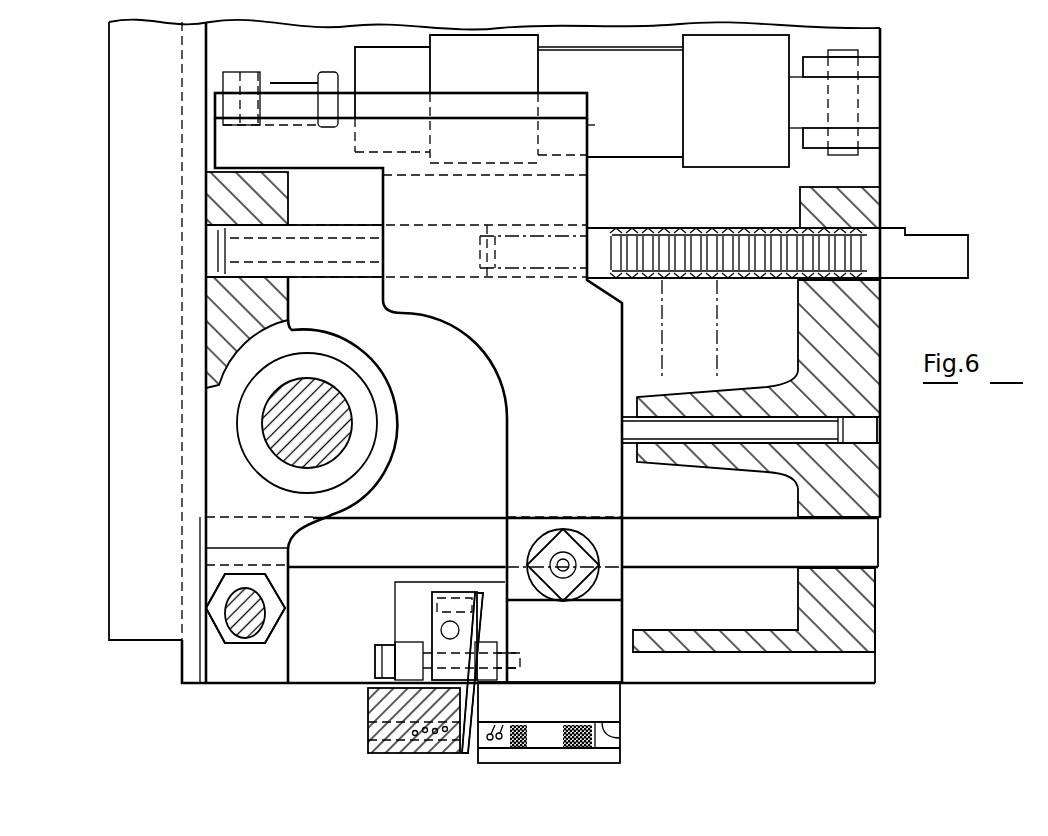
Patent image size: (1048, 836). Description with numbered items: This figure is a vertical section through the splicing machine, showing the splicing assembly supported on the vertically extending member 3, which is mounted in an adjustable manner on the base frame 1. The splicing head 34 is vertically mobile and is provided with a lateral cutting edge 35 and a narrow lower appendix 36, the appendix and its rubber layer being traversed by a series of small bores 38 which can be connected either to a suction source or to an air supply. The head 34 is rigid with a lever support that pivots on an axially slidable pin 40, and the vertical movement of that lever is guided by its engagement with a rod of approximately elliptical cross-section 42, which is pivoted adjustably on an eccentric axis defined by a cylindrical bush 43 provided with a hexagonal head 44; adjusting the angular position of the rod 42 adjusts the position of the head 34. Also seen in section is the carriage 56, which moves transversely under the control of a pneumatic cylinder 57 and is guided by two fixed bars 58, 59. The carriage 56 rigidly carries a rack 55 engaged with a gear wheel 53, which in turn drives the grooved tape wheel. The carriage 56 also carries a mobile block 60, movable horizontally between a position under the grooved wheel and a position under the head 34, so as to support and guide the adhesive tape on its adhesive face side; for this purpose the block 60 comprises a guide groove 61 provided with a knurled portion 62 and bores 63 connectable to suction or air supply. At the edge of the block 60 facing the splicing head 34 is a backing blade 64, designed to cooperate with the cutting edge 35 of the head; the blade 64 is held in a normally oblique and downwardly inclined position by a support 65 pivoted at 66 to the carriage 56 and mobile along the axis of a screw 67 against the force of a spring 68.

The base frame 1 is at (120, 500).
The vertically extending member 3 is at (857, 320).
The splicing head 34 is at (368, 733).
The lateral cutting edge 35 is at (462, 752).
The narrow lower appendix 36 is at (385, 722).
The small bores 38 is at (425, 742).
The axially slidable pin 40 is at (335, 423).
The rod of approximately elliptical cross-section 42 is at (265, 628).
The cylindrical bush 43 is at (266, 608).
The hexagonal head 44 is at (220, 597).
The gear wheel 53 is at (555, 278).
The rack 55 is at (767, 258).
The carriage 56 is at (507, 458).
The pneumatic cylinder 57 is at (626, 142).
The fixed bar 58 is at (330, 262).
The fixed bar 59 is at (720, 552).
The mobile block 60 is at (624, 751).
The guide groove 61 is at (612, 735).
The knurled portion 62 is at (552, 733).
The bores 63 is at (500, 726).
The backing blade 64 is at (466, 756).
The support 65 is at (450, 594).
The pivot 66 is at (458, 630).
The screw 67 is at (410, 650).
The spring 68 is at (492, 650).